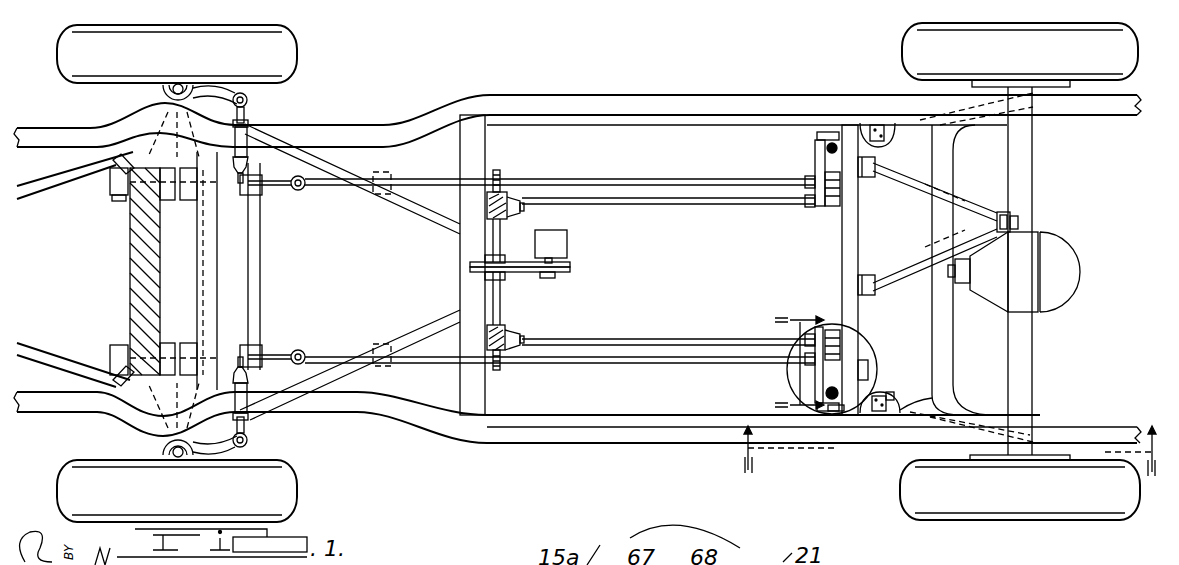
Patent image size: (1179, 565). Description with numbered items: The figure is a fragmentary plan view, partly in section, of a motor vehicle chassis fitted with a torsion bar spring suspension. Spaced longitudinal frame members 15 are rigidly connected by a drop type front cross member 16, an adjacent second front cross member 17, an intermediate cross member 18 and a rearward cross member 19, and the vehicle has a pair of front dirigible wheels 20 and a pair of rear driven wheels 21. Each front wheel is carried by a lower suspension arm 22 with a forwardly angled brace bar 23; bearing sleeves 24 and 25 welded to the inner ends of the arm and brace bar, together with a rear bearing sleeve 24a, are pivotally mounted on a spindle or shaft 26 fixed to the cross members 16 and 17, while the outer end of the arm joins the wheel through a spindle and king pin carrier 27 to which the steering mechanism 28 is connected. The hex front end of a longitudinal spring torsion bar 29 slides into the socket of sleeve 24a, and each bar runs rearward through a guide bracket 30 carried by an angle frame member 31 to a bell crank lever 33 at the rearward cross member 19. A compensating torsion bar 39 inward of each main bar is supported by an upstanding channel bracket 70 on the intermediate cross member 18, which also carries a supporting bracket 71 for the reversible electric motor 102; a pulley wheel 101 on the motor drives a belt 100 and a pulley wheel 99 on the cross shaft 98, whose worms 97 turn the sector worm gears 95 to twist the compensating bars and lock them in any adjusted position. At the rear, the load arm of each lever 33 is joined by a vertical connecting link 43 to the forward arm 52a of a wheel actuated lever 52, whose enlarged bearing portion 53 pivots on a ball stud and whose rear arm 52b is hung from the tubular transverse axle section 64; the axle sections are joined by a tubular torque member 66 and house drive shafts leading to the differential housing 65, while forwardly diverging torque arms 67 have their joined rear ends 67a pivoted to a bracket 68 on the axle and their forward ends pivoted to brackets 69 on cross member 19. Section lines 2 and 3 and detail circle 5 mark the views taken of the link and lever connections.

The longitudinal frame member 15 is at (690, 96).
The drop type front cross member 16 is at (133, 247).
The second front cross member 17 is at (206, 276).
The intermediate cross member 18 is at (460, 258).
The rearward cross member 19 is at (845, 235).
The front dirigible wheel 20 is at (280, 52).
The rear driven wheel 21 is at (1100, 70).
The front lower suspension arm 22 is at (235, 130).
The brace bar 23 is at (112, 170).
The bearing sleeve 24 is at (170, 195).
The rear bearing sleeve 24a is at (247, 196).
The bearing sleeve 25 is at (116, 199).
The spindle or shaft 26 is at (173, 271).
The spindle and king pin mounting or carrier 27 is at (160, 93).
The steering mechanism 28 is at (252, 163).
The longitudinal spring torsion bar 29 is at (342, 186).
The bracket 30 is at (378, 196).
The angle frame member 31 is at (417, 203).
The bell crank lever 33 is at (818, 172).
The compensating torsion bar 39 is at (748, 204).
The vertical connecting link 43 is at (869, 370).
The wheel actuated lever or torque member 52 is at (893, 418).
The forward swingable arm 52a is at (836, 411).
The rear arm 52b is at (903, 410).
The enlarged bearing portion 53 is at (890, 393).
The tubular transverse axle section 64 is at (1020, 372).
The differential housing 65 is at (1032, 278).
The tubular torque member 66 is at (945, 344).
The torque arm 67 is at (968, 205).
The rear joined ends of torque arms 67a is at (1025, 219).
The bracket 68 is at (1012, 209).
The bracket 69 is at (871, 178).
The upstanding channel bracket 70 is at (506, 192).
The supporting bracket 71 is at (520, 233).
The sector worm gear 95 is at (500, 170).
The worm 97 is at (519, 332).
The cross shaft 98 is at (500, 290).
The pulley wheel 99 is at (478, 267).
The driving belt 100 is at (573, 267).
The pulley wheel 101 is at (567, 272).
The reversible electric motor 102 is at (570, 230).
The section line 2- 2 is at (934, 437).
The section line 3- 3 is at (792, 351).
The detail circle 5 is at (835, 385).